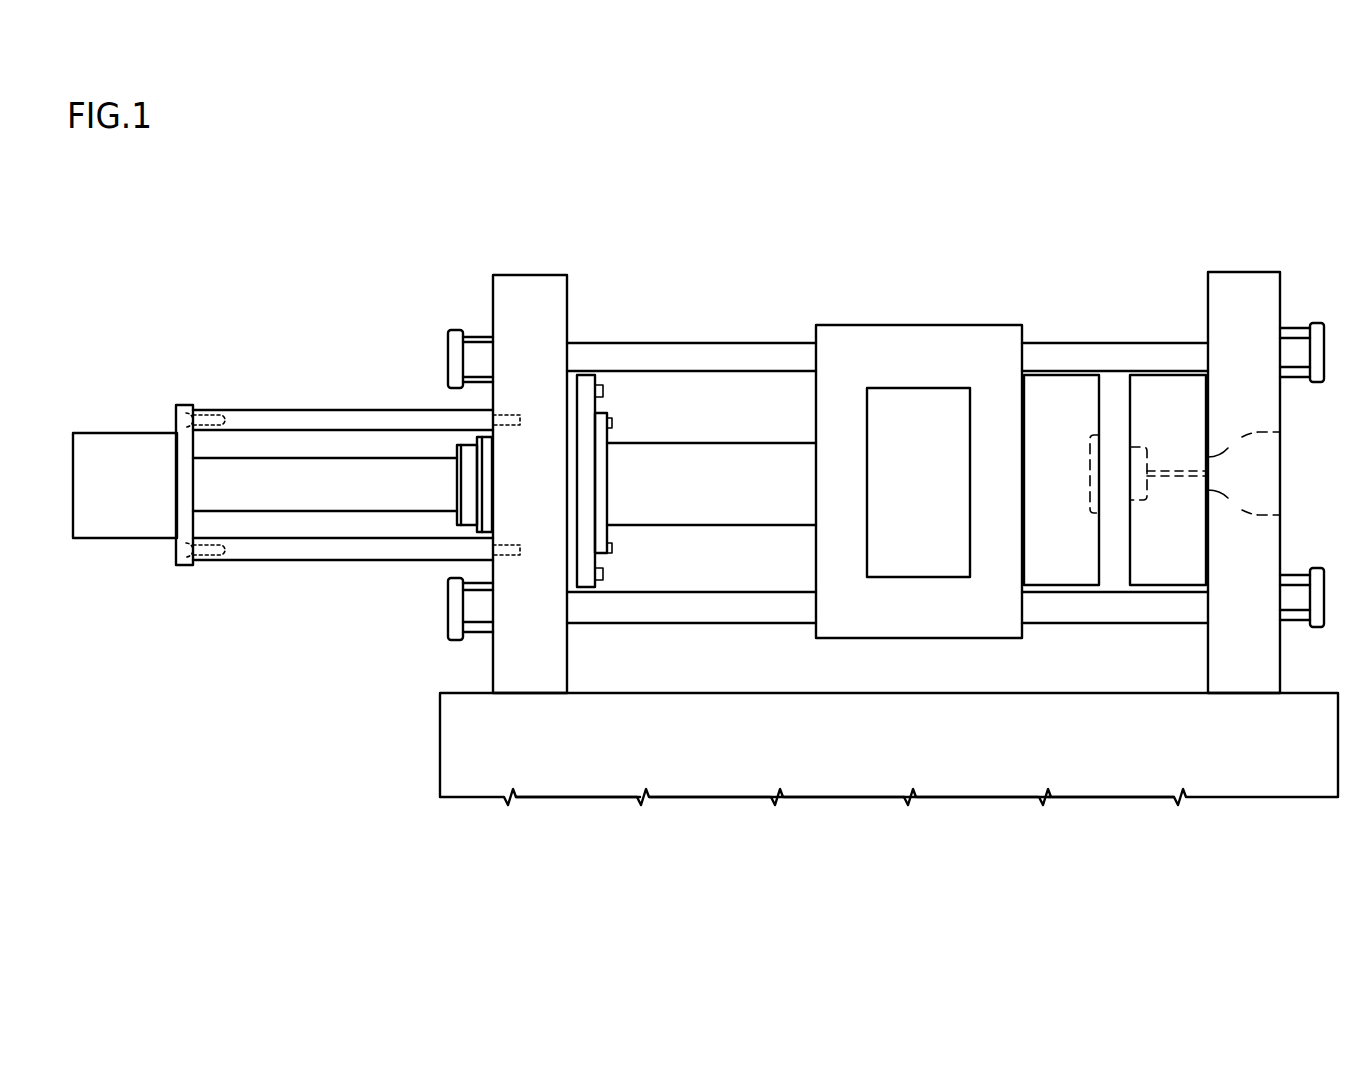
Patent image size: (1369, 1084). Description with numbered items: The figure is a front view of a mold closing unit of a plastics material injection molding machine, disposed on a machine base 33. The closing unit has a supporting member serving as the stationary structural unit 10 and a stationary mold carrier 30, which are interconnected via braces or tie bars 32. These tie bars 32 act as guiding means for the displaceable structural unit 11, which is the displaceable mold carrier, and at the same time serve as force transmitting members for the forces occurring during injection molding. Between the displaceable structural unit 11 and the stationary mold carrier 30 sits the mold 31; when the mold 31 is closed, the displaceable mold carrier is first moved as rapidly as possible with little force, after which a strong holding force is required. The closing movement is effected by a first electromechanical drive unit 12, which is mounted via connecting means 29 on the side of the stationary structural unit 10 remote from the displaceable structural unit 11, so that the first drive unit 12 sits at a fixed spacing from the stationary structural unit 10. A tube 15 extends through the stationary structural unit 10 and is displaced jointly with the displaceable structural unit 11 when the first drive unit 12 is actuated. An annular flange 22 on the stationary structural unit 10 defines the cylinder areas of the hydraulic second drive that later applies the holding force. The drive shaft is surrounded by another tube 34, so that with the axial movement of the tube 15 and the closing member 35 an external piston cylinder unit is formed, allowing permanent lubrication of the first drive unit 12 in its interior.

The stationary structural unit 10 is at (525, 292).
The displaceable structural unit 11 is at (906, 330).
The first electromechanical drive unit 12 is at (110, 503).
The tube 15 is at (688, 503).
The annular flange 22 is at (590, 407).
The connecting means 29 is at (252, 418).
The stationary mold carrier 30 is at (1240, 290).
The mold 31 is at (1158, 405).
The tie bars 32 is at (690, 352).
The machine base 33 is at (1022, 766).
The tube 34 is at (323, 503).
The closing member 35 is at (470, 452).